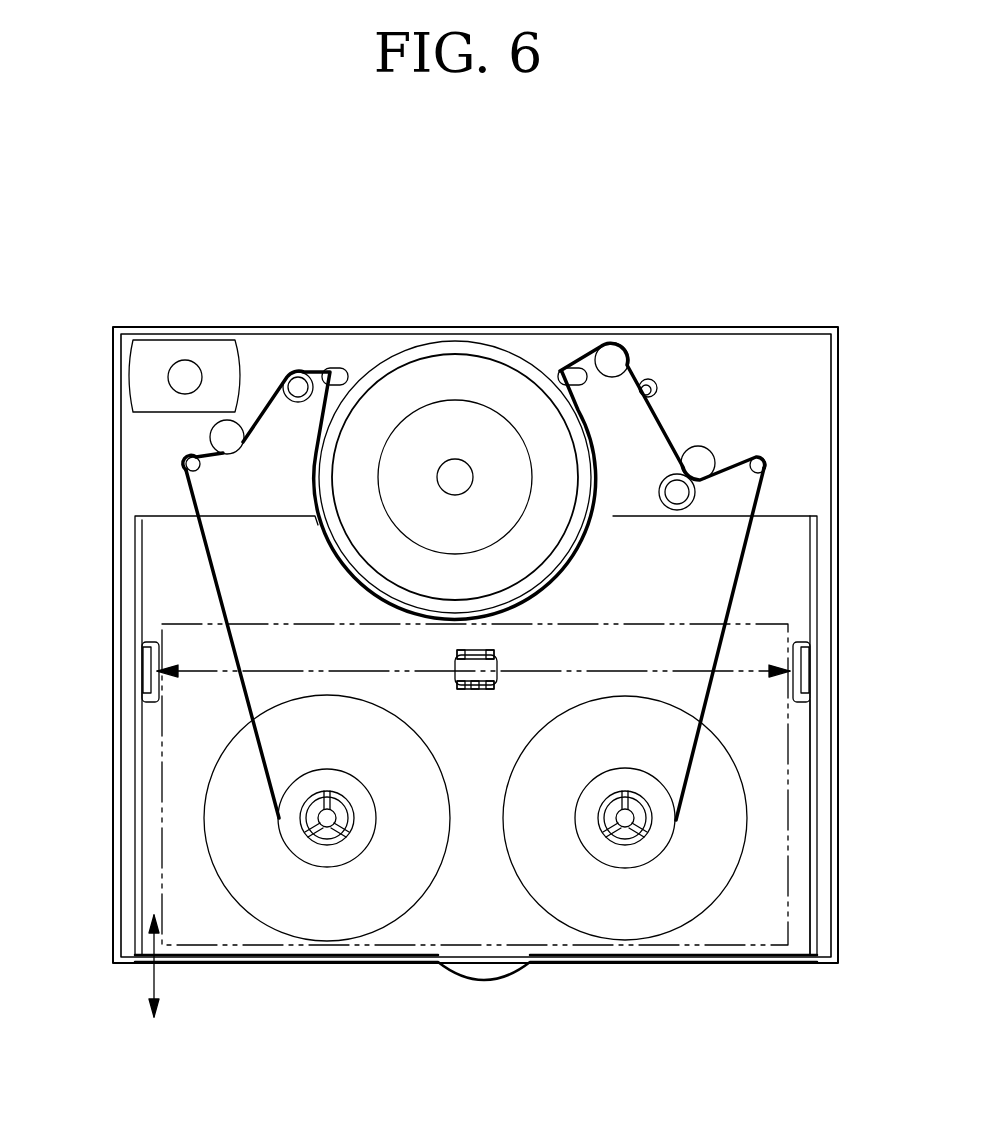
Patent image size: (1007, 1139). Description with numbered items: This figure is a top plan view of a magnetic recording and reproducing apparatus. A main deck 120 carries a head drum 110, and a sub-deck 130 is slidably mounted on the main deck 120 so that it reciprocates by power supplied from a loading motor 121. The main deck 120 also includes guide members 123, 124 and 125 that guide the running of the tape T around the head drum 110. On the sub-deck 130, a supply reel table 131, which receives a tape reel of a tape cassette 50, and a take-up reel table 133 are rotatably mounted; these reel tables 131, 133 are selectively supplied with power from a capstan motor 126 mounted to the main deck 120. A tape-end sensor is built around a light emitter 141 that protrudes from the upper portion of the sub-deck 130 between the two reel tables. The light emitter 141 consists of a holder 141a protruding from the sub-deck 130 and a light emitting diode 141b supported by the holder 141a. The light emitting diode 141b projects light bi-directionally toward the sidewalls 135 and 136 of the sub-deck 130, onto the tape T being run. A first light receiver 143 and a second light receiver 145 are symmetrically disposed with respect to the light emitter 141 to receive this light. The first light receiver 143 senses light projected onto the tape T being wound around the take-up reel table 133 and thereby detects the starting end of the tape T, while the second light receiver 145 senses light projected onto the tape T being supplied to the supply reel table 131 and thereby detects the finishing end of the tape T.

The head drum 110 is at (417, 362).
The main deck 120 is at (838, 432).
The loading motor 121 is at (173, 348).
The guide member 123 is at (297, 370).
The guide member 124 is at (227, 437).
The guide member 125 is at (193, 464).
The capstan motor 126 is at (698, 455).
The sub-deck 130 is at (798, 942).
The supply reel table 131 is at (326, 866).
The take-up reel table 133 is at (625, 866).
The sidewall 135 is at (815, 913).
The sidewall 136 is at (135, 912).
The light emitter 141 is at (487, 864).
The holder 141a is at (486, 688).
The light emitting diode 141b is at (463, 688).
The first light receiver 143 is at (804, 624).
The second light receiver 145 is at (153, 618).
The tape cassette 50 is at (800, 806).
The tape T is at (743, 560).